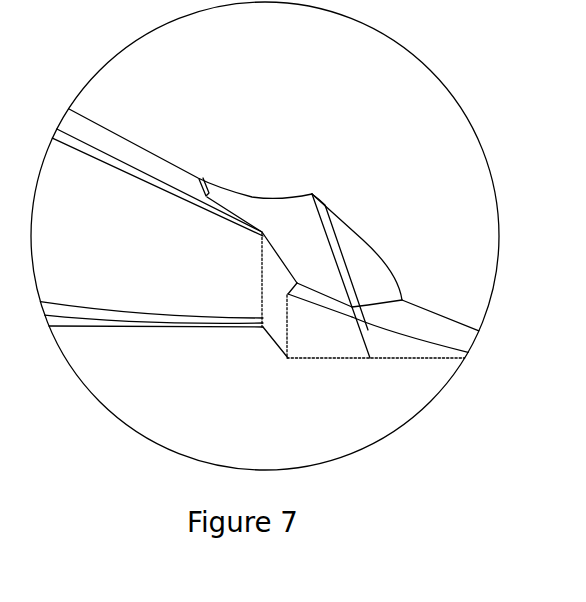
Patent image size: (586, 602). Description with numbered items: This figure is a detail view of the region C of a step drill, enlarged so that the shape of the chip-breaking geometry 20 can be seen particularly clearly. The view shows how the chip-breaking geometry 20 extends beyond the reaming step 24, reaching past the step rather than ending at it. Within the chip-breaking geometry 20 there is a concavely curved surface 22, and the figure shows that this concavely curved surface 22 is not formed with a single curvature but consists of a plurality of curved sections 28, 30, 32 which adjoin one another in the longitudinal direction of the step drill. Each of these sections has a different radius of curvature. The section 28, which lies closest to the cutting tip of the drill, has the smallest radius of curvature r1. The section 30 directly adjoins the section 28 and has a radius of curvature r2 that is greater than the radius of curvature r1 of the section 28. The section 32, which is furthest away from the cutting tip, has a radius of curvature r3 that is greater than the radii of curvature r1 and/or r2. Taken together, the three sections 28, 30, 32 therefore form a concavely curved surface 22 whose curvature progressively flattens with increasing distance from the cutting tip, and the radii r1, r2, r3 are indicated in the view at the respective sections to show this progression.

The region C is at (265, 236).
The chip-breaking geometry 20 is at (347, 240).
The concavely curved surface 22 is at (368, 257).
The reaming step 24 is at (283, 327).
The section 28 is at (295, 288).
The section 30 is at (352, 307).
The section 32 is at (377, 288).
The radius of curvature r1 is at (256, 194).
The radius of curvature r2 is at (347, 306).
The radius of curvature r3 is at (380, 304).